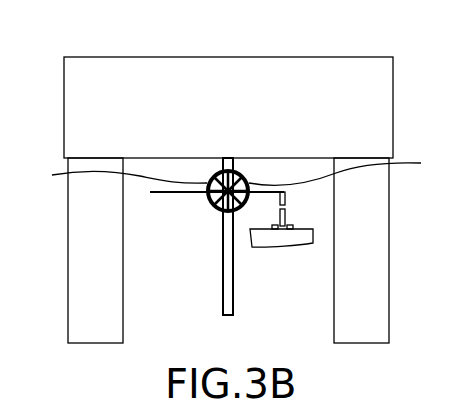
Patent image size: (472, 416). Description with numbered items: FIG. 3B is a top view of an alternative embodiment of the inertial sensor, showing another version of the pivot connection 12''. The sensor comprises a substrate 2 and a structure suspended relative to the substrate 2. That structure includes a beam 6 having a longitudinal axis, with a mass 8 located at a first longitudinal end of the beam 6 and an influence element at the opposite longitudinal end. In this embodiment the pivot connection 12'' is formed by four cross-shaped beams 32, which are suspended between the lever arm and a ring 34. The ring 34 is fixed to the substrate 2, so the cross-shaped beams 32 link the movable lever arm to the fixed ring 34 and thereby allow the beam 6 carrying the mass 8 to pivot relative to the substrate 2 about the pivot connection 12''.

The mass 8 is at (363, 62).
The substrate 2 is at (403, 269).
The beam 6 is at (233, 298).
The pivot connection 12'' is at (206, 225).
The ring 34 is at (115, 177).
The cross-shaped beams 32 is at (349, 169).